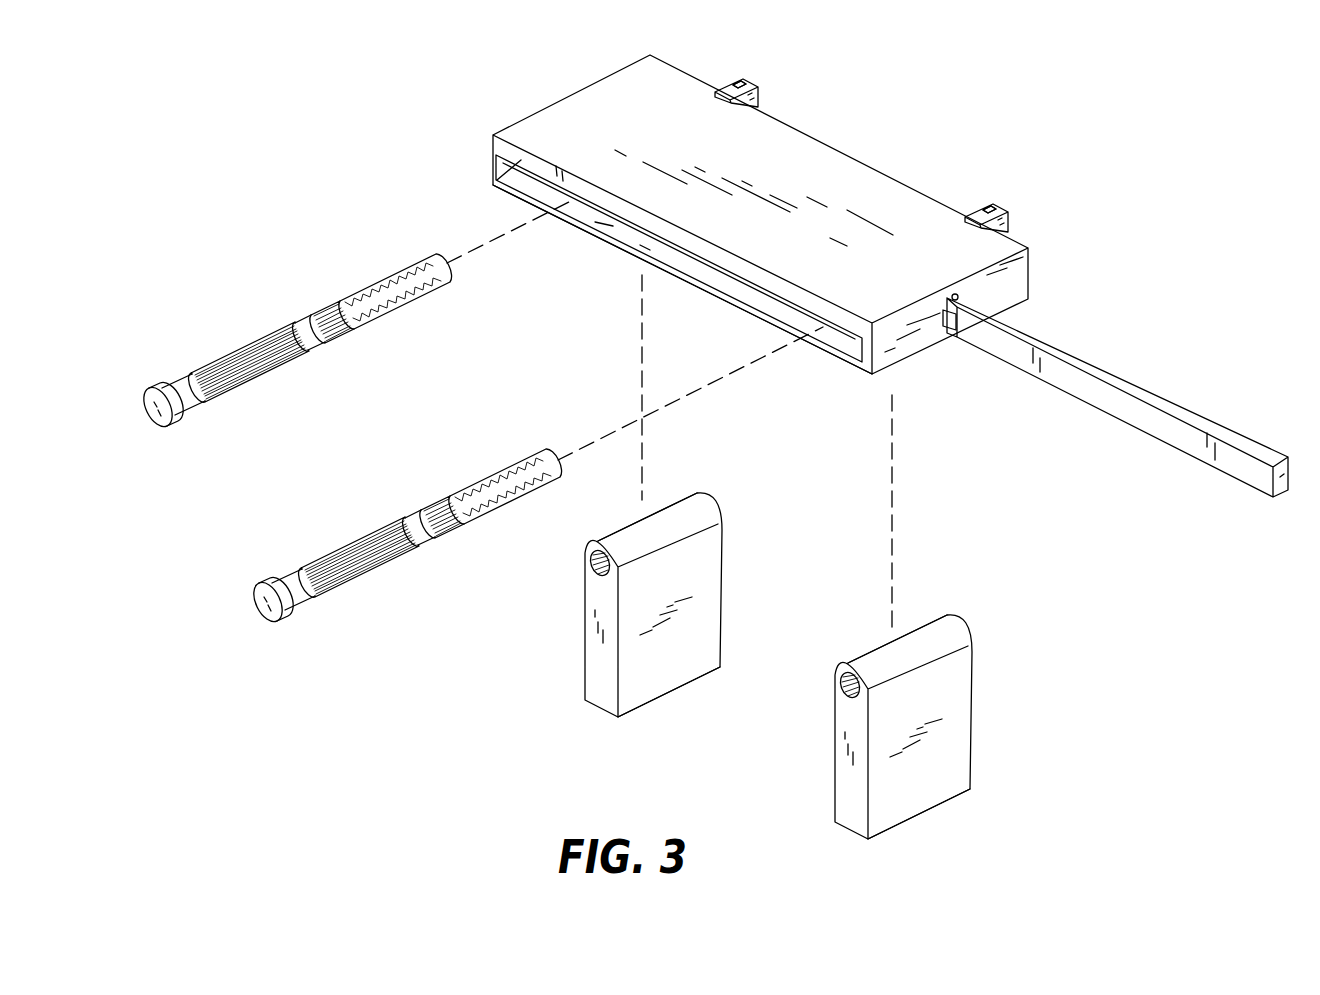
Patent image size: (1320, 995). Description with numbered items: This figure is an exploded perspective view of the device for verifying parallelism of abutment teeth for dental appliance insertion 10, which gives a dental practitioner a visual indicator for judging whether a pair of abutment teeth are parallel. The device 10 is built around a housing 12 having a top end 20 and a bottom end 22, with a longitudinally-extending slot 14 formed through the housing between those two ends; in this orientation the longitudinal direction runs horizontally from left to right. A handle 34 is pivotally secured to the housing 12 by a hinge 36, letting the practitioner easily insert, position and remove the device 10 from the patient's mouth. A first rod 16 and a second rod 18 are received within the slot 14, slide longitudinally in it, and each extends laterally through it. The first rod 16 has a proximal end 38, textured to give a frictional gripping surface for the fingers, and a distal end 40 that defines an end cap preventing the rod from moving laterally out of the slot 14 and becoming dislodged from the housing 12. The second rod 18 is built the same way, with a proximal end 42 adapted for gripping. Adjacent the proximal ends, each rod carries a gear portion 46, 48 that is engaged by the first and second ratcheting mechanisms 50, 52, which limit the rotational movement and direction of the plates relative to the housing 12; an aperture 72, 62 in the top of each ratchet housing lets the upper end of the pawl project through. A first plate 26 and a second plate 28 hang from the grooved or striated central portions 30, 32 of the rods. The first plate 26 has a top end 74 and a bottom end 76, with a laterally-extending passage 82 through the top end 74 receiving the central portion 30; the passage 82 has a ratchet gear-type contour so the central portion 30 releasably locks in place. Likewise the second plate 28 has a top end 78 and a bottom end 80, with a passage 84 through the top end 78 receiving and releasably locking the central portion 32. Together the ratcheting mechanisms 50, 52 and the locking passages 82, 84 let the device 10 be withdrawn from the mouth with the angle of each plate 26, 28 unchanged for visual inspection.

The device for verifying parallelism of abutment teeth for dental appliance insertio 10 is at (1165, 118).
The housing 12 is at (858, 160).
The longitudinally-extending slot 14 is at (503, 192).
The first rod 16 is at (424, 506).
The second rod 18 is at (333, 313).
The top end 20 is at (856, 263).
The bottom end 22 is at (829, 353).
The first plate 26 is at (893, 697).
The second plate 28 is at (643, 604).
The central portion 30 is at (359, 538).
The central portion 32 is at (220, 358).
The handle 34 is at (1111, 395).
The hinge 36 is at (935, 328).
The proximal end 38 is at (525, 457).
The distal end 40 is at (271, 565).
The proximal end 42 is at (153, 384).
The gear portion 46 is at (442, 484).
The gear portion 48 is at (317, 309).
The first ratcheting mechanism 50 is at (1030, 221).
The second ratcheting mechanism 52 is at (760, 96).
The aperture 62 is at (741, 62).
The aperture 72 is at (1032, 191).
The top end 74 is at (909, 609).
The bottom end 76 is at (937, 814).
The top end 78 is at (668, 508).
The bottom end 80 is at (648, 704).
The passage 82 is at (803, 702).
The passage 84 is at (572, 574).